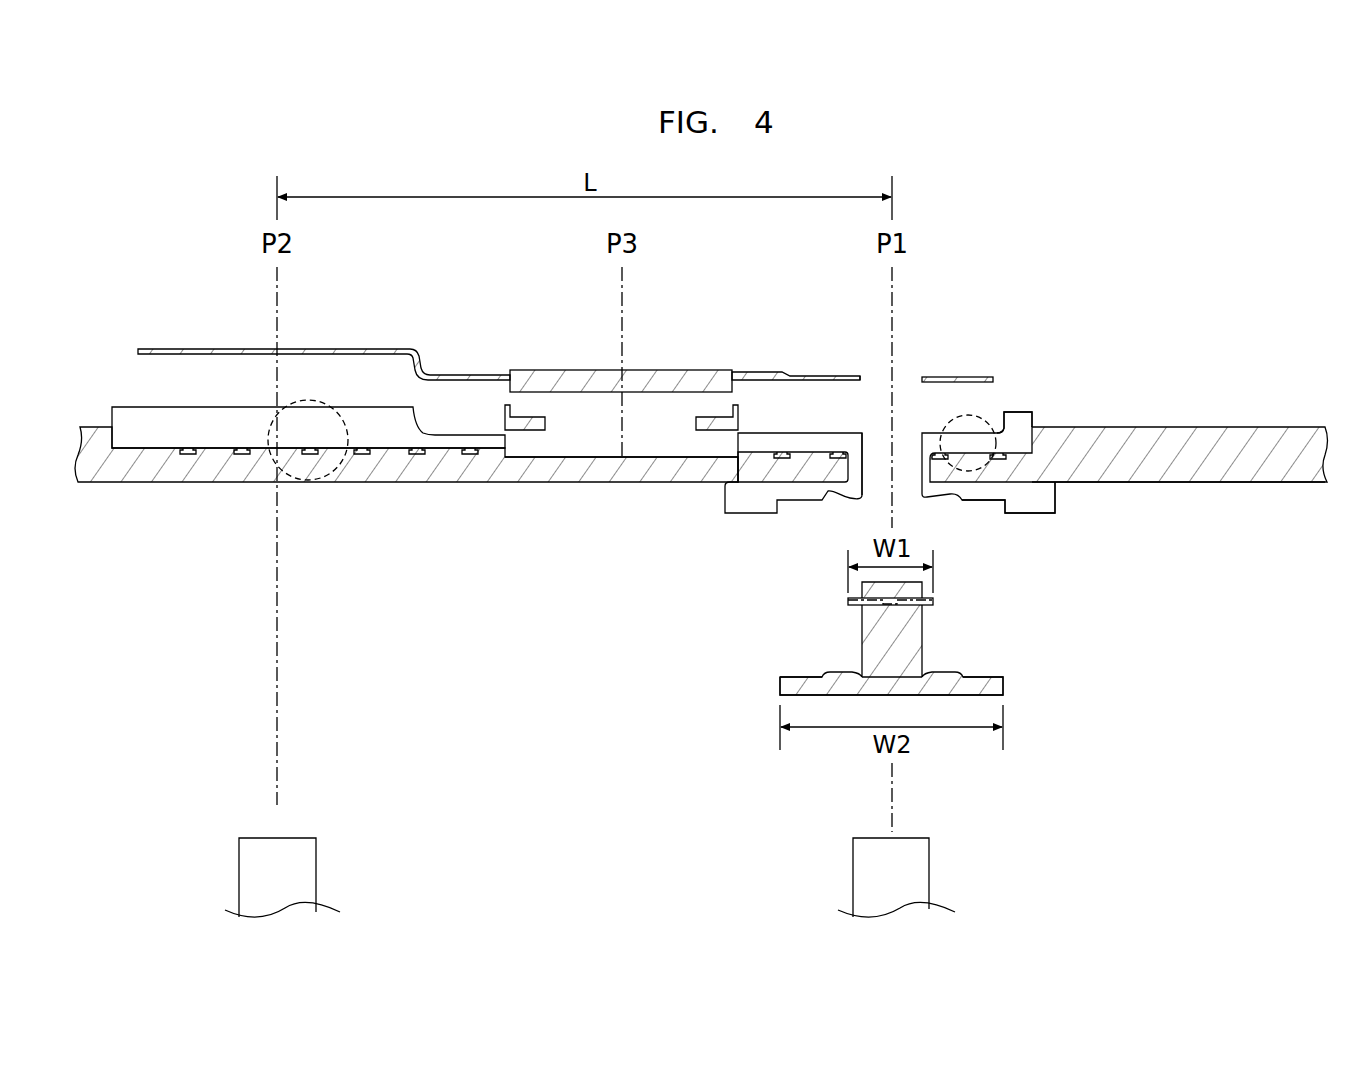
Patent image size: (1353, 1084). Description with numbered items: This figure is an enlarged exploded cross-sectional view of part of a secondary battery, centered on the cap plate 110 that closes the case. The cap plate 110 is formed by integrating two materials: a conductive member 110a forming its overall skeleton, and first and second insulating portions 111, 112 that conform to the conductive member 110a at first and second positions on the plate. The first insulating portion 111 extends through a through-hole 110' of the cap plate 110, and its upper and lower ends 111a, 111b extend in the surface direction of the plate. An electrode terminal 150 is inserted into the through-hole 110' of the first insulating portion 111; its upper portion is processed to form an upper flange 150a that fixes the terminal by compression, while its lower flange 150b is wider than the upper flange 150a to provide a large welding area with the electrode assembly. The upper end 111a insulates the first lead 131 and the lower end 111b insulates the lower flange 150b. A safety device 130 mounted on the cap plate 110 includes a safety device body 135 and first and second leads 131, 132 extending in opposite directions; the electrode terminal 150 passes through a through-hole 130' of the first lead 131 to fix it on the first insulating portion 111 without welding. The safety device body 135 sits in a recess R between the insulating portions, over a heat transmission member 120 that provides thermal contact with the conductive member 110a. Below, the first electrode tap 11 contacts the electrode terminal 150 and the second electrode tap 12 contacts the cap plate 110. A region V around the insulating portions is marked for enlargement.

The first electrode tap 11 is at (918, 877).
The second electrode tap 12 is at (306, 870).
The cap plate 110 is at (701, 417).
The conductive member 110a is at (1245, 463).
The through-hole 110' is at (867, 439).
The first insulating portion 111 is at (1064, 400).
The upper end of first insulating portion 111a is at (1025, 418).
The lower end of first insulating portion 111b is at (1045, 497).
The second insulating portion 112 is at (387, 437).
The heat transmission member 120 is at (714, 424).
The safety device 130 is at (796, 338).
The through-hole of first lead 130' is at (914, 339).
The first lead 131 is at (978, 378).
The second lead 132 is at (231, 349).
The safety device body 135 is at (548, 378).
The electrode terminal 150 is at (912, 632).
The upper flange 150a is at (933, 602).
The lower flange 150b is at (990, 686).
The region V is at (270, 460).
The recess R is at (590, 442).